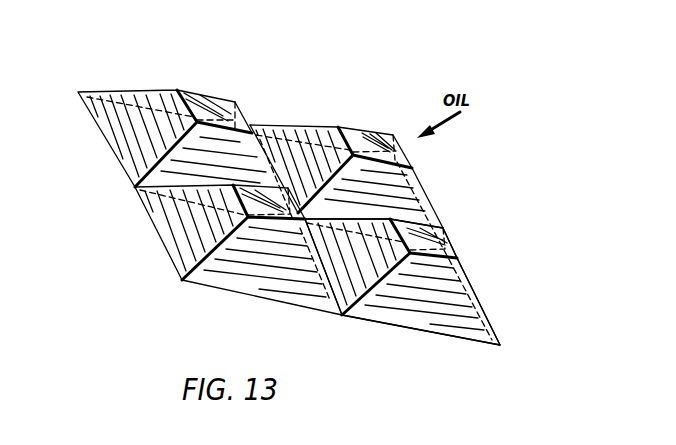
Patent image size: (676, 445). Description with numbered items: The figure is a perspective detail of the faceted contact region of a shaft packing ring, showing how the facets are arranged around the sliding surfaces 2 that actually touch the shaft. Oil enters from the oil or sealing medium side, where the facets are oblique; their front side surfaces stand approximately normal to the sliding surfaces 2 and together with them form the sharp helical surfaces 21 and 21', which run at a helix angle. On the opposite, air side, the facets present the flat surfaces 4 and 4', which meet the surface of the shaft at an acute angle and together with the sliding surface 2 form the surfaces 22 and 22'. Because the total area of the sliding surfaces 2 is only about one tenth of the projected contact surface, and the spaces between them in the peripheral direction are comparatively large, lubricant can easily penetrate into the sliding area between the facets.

The sliding surface 2 is at (440, 247).
The flat surface 4 is at (380, 287).
The flat surface 4' is at (424, 324).
The sharp helical surface 21 is at (294, 102).
The sharp helical surface 21' is at (500, 286).
The surface 22 is at (376, 304).
The surface 22' is at (437, 280).